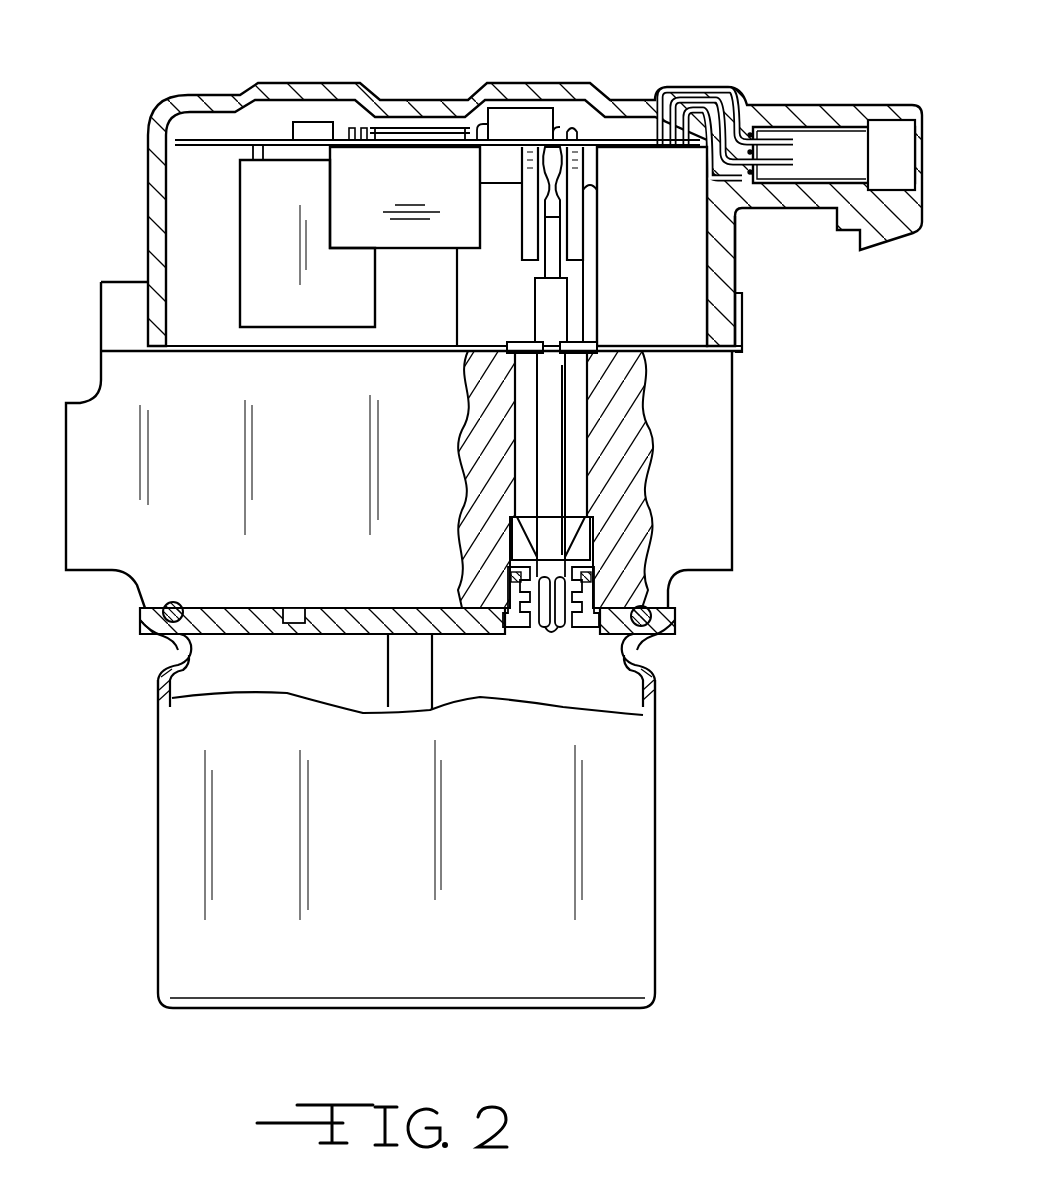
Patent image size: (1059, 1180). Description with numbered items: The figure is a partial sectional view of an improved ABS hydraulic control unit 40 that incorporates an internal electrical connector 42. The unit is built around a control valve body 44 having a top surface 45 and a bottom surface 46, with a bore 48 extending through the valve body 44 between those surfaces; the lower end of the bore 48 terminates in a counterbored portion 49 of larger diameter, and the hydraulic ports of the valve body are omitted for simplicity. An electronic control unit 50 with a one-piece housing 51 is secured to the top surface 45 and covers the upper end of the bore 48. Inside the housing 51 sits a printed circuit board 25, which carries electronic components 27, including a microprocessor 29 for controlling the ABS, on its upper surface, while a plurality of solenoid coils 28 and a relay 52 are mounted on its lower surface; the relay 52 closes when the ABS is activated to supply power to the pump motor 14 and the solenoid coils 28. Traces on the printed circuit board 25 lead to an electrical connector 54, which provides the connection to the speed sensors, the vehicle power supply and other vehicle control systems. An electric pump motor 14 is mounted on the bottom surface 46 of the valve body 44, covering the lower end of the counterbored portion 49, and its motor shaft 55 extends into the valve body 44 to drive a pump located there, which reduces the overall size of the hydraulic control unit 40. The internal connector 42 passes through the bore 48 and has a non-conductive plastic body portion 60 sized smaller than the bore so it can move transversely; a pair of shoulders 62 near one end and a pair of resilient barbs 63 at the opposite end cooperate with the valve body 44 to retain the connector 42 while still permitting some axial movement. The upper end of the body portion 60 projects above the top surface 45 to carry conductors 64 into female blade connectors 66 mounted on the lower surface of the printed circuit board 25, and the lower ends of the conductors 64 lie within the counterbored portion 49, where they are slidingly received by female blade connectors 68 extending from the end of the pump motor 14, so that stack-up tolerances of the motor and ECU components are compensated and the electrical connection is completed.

The pump motor 14 is at (630, 860).
The printed circuit board 25 is at (208, 147).
The electronic components 27 is at (312, 124).
The solenoid coils 28 is at (322, 306).
The microprocessor 29 is at (405, 128).
The hydraulic control unit 40 is at (116, 178).
The internal electrical connector 42 is at (580, 287).
The control valve body 44 is at (713, 400).
The top surface 45 is at (184, 345).
The bottom surface 46 is at (203, 613).
The bore 48 is at (517, 455).
The counterbored portion 49 is at (510, 557).
The electronic control unit 50 is at (177, 70).
The housing 51 is at (735, 250).
The relay 52 is at (412, 188).
The electrical connector 54 is at (905, 102).
The motor shaft 55 is at (407, 670).
The body portion 60 is at (553, 472).
The shoulders 62 is at (518, 341).
The resilient barbs 63 is at (583, 545).
The conductors 64 is at (557, 240).
The female blade connectors 66 is at (577, 165).
The female blade connectors 68 is at (597, 630).